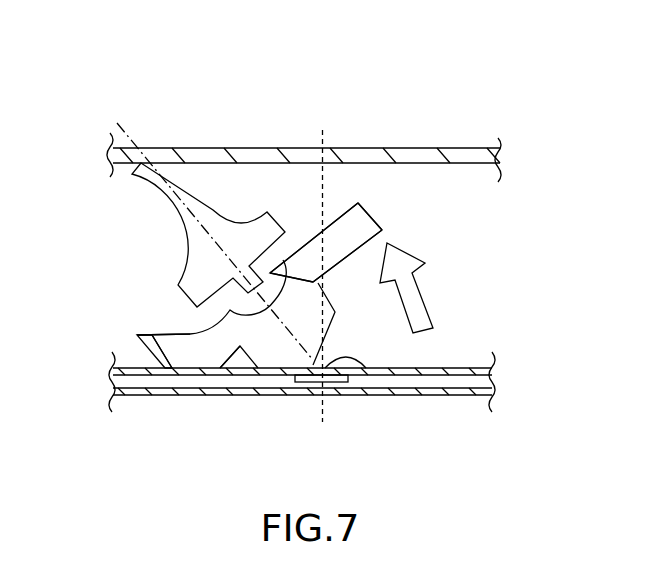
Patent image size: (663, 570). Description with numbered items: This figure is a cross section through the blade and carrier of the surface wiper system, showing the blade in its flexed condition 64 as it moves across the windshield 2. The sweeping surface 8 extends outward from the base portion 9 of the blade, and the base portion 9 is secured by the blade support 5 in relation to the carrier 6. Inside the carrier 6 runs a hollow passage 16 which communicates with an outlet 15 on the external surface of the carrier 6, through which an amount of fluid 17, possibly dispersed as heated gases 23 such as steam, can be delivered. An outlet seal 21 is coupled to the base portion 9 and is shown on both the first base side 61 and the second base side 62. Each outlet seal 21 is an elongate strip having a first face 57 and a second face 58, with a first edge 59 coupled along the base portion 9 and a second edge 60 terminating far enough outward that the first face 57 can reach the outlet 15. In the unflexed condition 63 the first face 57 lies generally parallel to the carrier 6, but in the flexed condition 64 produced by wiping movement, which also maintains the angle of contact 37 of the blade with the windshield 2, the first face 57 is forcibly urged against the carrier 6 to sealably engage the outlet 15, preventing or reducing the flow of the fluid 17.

The windshield 2 is at (304, 123).
The angle of contact 37 is at (190, 178).
The sweeping surface 8 is at (210, 210).
The flexed condition 64 is at (93, 110).
The unflexed condition 63 is at (337, 124).
The outlet seal 21 is at (383, 230).
The second face 58 is at (318, 237).
The second edge 60 is at (375, 218).
The first face 57 is at (344, 262).
The first edge 59 is at (326, 292).
The base portion 9 is at (334, 344).
The amount of fluid 17 is at (465, 288).
The heated gases 23 is at (424, 292).
The carrier 6 is at (347, 390).
The outlet 15 is at (413, 367).
The hollow passage 16 is at (480, 383).
The blade support 5 is at (317, 409).
The first base side 61 is at (240, 346).
The second base side 62 is at (318, 375).